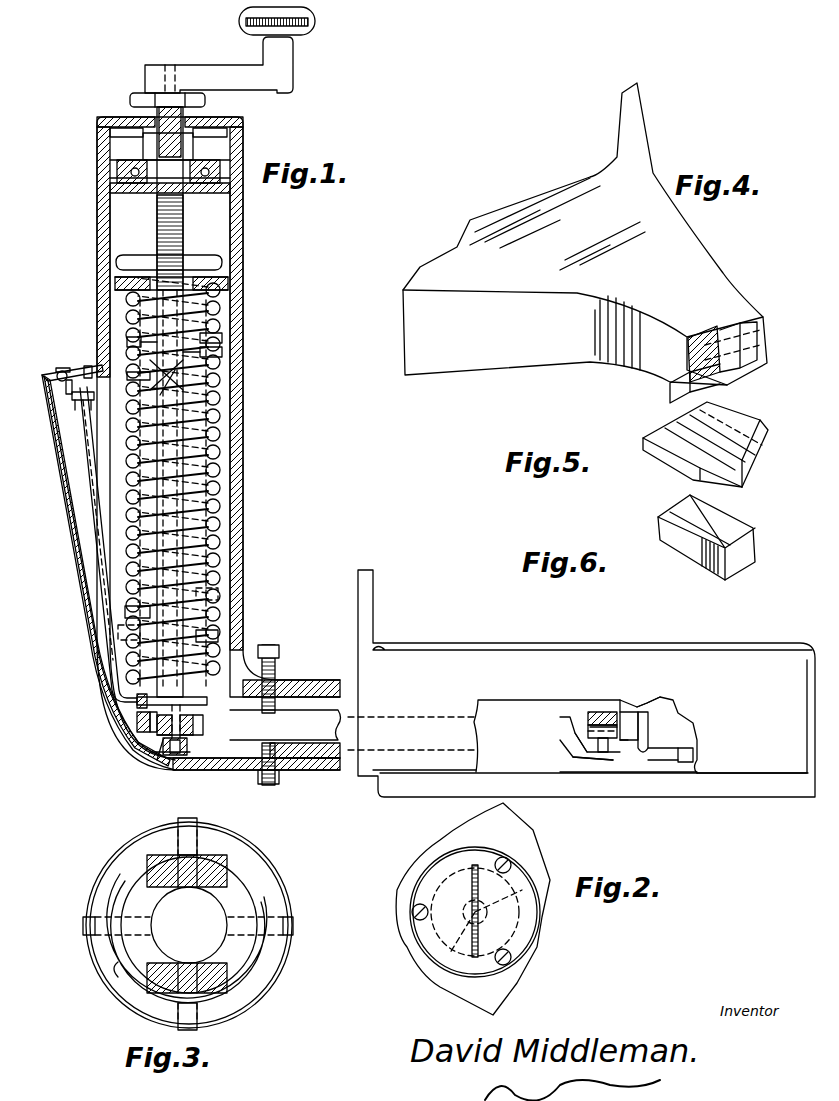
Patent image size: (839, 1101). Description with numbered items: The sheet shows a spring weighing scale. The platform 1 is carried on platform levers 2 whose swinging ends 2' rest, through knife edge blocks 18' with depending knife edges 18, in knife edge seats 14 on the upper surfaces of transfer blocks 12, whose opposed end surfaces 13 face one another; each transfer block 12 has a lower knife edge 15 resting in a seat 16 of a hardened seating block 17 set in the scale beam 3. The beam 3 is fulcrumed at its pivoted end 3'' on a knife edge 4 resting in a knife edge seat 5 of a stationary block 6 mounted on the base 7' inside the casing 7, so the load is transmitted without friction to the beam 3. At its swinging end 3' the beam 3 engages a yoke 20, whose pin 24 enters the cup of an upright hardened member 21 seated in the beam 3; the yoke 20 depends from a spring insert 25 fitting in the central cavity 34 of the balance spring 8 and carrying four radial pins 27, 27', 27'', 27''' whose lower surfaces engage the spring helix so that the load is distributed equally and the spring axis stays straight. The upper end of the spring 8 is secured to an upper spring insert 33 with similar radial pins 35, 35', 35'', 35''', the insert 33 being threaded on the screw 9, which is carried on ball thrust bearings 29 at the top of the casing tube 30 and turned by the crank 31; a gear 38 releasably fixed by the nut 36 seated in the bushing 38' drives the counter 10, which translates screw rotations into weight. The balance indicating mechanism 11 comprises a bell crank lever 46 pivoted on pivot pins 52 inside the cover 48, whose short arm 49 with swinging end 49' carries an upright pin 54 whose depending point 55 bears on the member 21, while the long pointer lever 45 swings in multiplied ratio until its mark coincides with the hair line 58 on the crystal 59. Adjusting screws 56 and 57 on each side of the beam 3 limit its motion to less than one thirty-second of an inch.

In FIG. 1, the platform 1 is at (465, 646).
In FIG. 4, the platform lever 2 is at (551, 234).
In FIG. 1, the swinging end of platform lever 2' is at (602, 666).
In FIG. 4, the swinging end of platform lever 2' is at (735, 332).
In FIG. 1, the scale beam 3 is at (410, 733).
In FIG. 1, the swinging end of beam 3' is at (153, 773).
In FIG. 1, the pivoted end of beam 3'' is at (641, 690).
In FIG. 1, the fulcrum knife edge 4 is at (640, 714).
In FIG. 1, the knife edge seat 5 is at (645, 760).
In FIG. 1, the stationary block 6 is at (693, 750).
In FIG. 1, the casing 7 is at (752, 755).
In FIG. 1, the base 7' is at (628, 797).
In FIG. 1, the balance spring 8 is at (222, 488).
In FIG. 1, the screw 9 is at (185, 248).
In FIG. 1, the counter 10 is at (97, 150).
In FIG. 1, the balance indicating mechanism 11 is at (78, 470).
In FIG. 1, the transfer block 12 is at (594, 712).
In FIG. 5, the transfer block 12 is at (735, 404).
In FIG. 5, the end surface of transfer block 13 is at (755, 445).
In FIG. 5, the knife edge seat 14 is at (747, 416).
In FIG. 1, the knife edge 15 is at (603, 755).
In FIG. 5, the knife edge 15 is at (752, 474).
In FIG. 1, the seat 16 is at (598, 757).
In FIG. 6, the seat 16 is at (742, 532).
In FIG. 1, the seating block 17 is at (598, 745).
In FIG. 6, the seating block 17 is at (756, 556).
In FIG. 4, the knife edge 18 is at (673, 396).
In FIG. 4, the knife edge block 18' is at (641, 387).
In FIG. 1, the yoke 20 is at (190, 750).
In FIG. 1, the upright hardened member 21 is at (157, 737).
In FIG. 1, the pin 24 is at (200, 728).
In FIG. 1, the spring insert 25 is at (118, 632).
In FIG. 3, the pin 27 is at (167, 925).
In FIG. 1, the pin 27' is at (98, 652).
In FIG. 3, the pin 27' is at (205, 822).
In FIG. 1, the pin 27'' is at (247, 617).
In FIG. 3, the pin 27'' is at (286, 920).
In FIG. 1, the pin 27''' is at (250, 578).
In FIG. 3, the pin 27''' is at (223, 1018).
In FIG. 1, the ball thrust bearings 29 is at (220, 168).
In FIG. 1, the casing tube 30 is at (230, 370).
In FIG. 1, the crank 31 is at (277, 93).
In FIG. 1, the upper spring insert 33 is at (228, 320).
In FIG. 1, the central cavity of spring 34 is at (214, 432).
In FIG. 1, the radial pin 35 is at (99, 317).
In FIG. 1, the radial pin 35' is at (236, 371).
In FIG. 1, the radial pin 35'' is at (264, 331).
In FIG. 1, the radial pin 35''' is at (123, 394).
In FIG. 1, the nut 36 is at (205, 101).
In FIG. 1, the gear 38 is at (196, 127).
In FIG. 1, the bushing 38' is at (115, 165).
In FIG. 1, the pointer lever 45 is at (98, 532).
In FIG. 1, the bell crank lever 46 is at (137, 700).
In FIG. 1, the cover 48 is at (102, 572).
In FIG. 1, the short arm 49 is at (193, 689).
In FIG. 1, the swinging end of short arm 49' is at (228, 730).
In FIG. 1, the pivot pins 52 is at (137, 714).
In FIG. 1, the upright pin 54 is at (150, 732).
In FIG. 1, the depending point 55 is at (163, 740).
In FIG. 1, the adjusting screw 56 is at (268, 645).
In FIG. 1, the adjusting screw 57 is at (88, 366).
In FIG. 2, the adjusting screw 57 is at (505, 874).
In FIG. 1, the hair line 58 is at (62, 370).
In FIG. 2, the hair line 58 is at (468, 940).
In FIG. 1, the crystal 59 is at (69, 380).
In FIG. 2, the crystal 59 is at (445, 873).